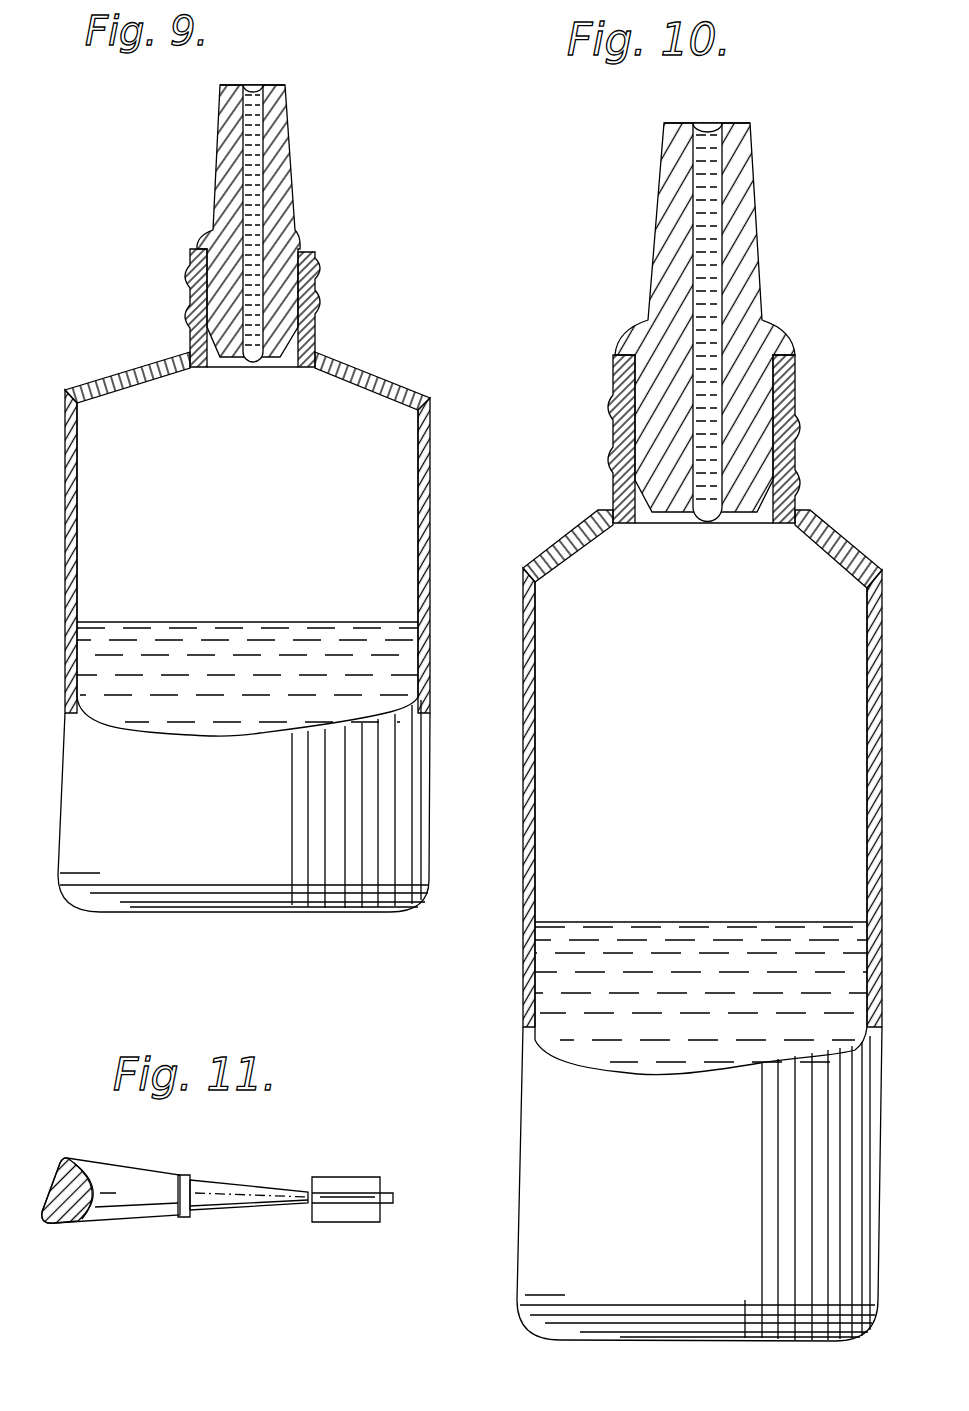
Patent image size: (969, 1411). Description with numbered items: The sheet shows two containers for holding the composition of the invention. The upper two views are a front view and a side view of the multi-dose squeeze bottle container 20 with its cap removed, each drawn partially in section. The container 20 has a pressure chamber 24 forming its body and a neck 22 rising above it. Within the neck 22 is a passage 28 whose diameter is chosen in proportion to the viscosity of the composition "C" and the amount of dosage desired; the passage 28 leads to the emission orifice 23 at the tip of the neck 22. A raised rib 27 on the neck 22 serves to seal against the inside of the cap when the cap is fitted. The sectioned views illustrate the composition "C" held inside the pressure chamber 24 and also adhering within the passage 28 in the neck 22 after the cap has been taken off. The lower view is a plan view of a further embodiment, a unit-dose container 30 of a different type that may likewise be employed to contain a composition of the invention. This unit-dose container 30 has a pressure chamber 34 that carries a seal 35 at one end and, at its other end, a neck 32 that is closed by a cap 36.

In FIG. 9, the multi-dose squeeze bottle container 20 is at (403, 348).
In FIG. 10, the multi-dose squeeze bottle container 20 is at (562, 505).
In FIG. 9, the neck 22 is at (215, 182).
In FIG. 10, the neck 22 is at (655, 275).
In FIG. 9, the emission orifice 23 is at (256, 88).
In FIG. 10, the emission orifice 23 is at (712, 122).
In FIG. 9, the pressure chamber 24 is at (262, 800).
In FIG. 10, the pressure chamber 24 is at (720, 1175).
In FIG. 9, the raised rib 27 is at (238, 82).
In FIG. 10, the raised rib 27 is at (738, 112).
In FIG. 9, the passage 28 is at (275, 300).
In FIG. 10, the passage 28 is at (715, 286).
In FIG. 9, the composition C is at (256, 205).
In FIG. 10, the composition C is at (713, 221).
In FIG. 11, the unit-dose container 30 is at (322, 1163).
In FIG. 11, the neck 32 is at (238, 1183).
In FIG. 11, the pressure chamber 34 is at (132, 1212).
In FIG. 11, the seal 35 is at (60, 1177).
In FIG. 11, the cap 36 is at (343, 1213).